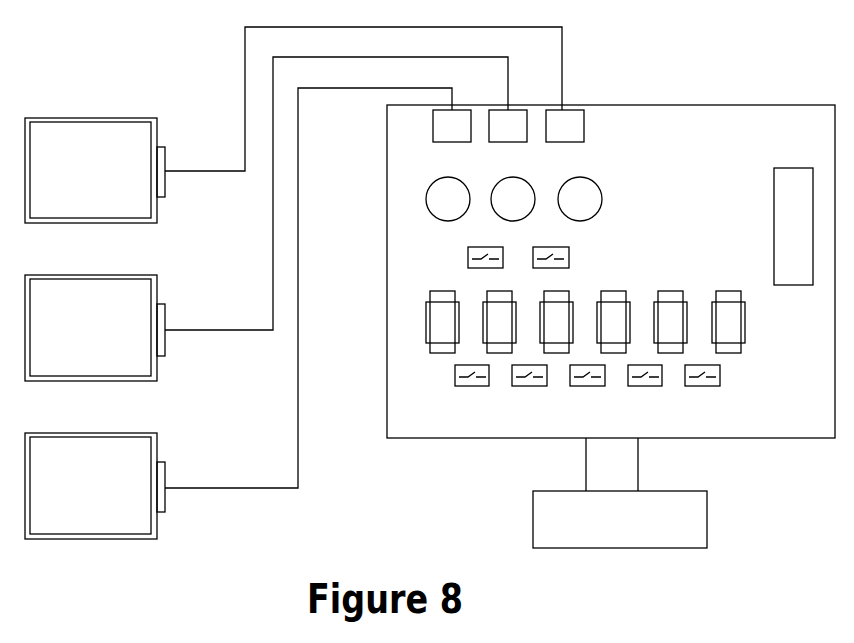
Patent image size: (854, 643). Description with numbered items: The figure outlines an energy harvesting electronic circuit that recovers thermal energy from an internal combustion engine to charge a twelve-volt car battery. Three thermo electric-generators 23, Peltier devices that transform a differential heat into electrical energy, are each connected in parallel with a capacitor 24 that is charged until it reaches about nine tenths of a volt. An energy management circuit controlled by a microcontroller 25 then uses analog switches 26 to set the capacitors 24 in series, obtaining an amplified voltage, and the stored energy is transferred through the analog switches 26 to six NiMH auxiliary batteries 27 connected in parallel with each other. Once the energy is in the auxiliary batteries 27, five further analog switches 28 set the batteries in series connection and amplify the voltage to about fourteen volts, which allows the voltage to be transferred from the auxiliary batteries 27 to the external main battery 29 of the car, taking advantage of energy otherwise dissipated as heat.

The thermo electric-generator 23 is at (95, 328).
The capacitor 24 is at (529, 199).
The microcontroller 25 is at (793, 226).
The analog switches 26 is at (533, 257).
The auxiliary batteries 27 is at (597, 322).
The analog switches 28 is at (601, 374).
The external main battery 29 is at (620, 493).